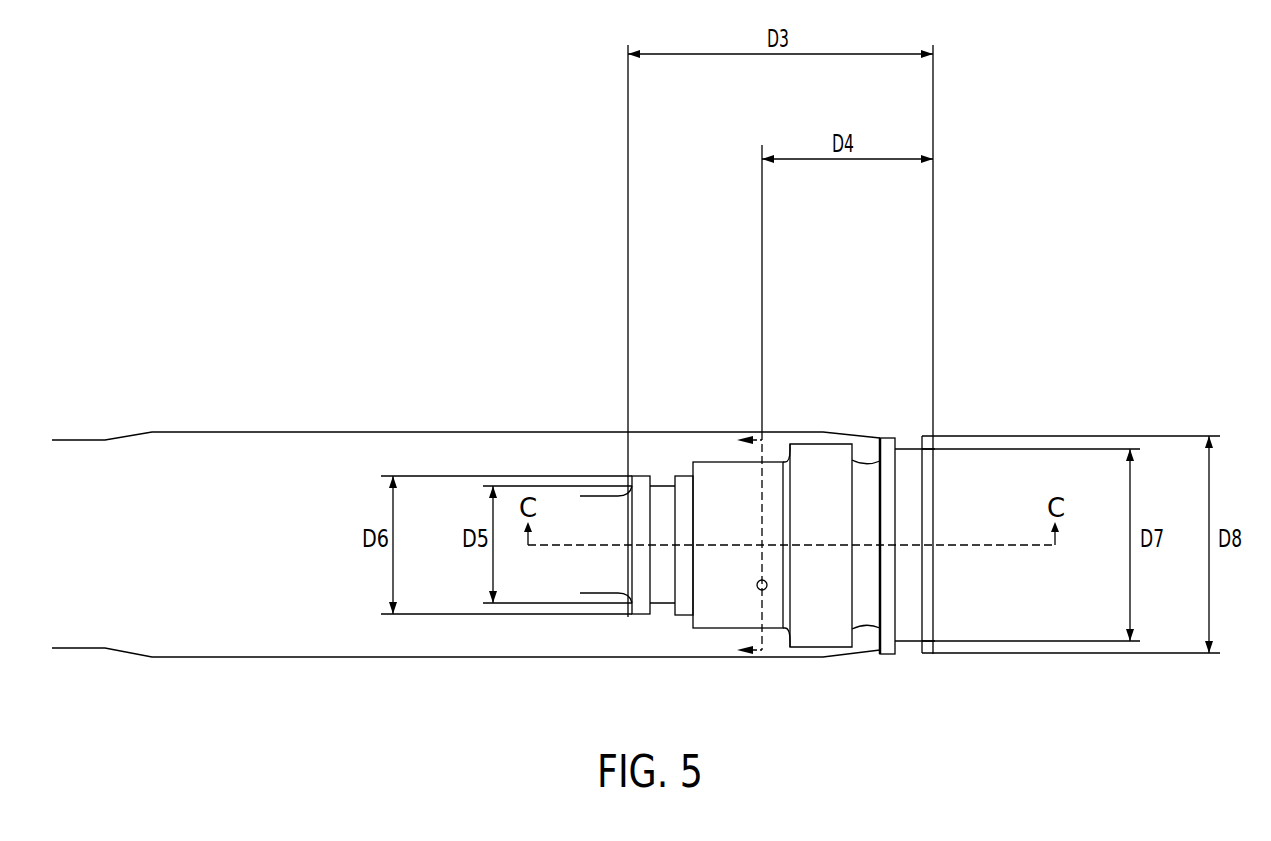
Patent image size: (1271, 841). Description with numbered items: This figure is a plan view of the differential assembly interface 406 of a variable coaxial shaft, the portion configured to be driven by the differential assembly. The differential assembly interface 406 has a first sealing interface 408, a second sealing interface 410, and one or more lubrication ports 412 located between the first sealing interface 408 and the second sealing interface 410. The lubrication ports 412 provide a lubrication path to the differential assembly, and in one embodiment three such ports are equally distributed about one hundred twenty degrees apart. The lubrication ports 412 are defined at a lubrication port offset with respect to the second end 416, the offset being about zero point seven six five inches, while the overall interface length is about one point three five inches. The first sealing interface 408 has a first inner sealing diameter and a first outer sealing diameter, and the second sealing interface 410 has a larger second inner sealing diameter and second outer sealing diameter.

The differential assembly interface 406 is at (1028, 326).
The first sealing interface 408 is at (667, 603).
The second sealing interface 410 is at (910, 632).
The lubrication port 412 is at (760, 591).
The second end 416 is at (935, 600).